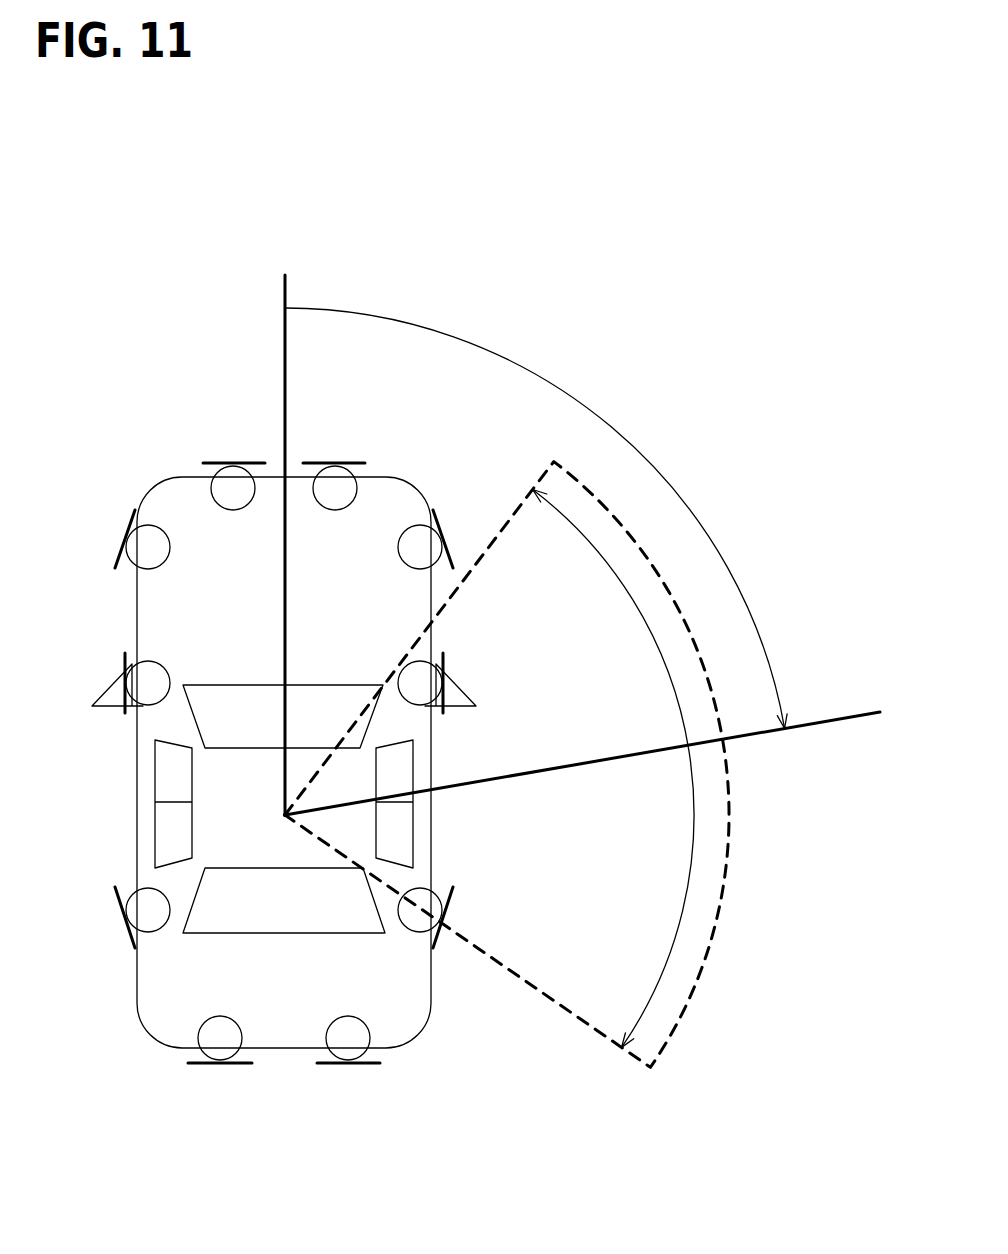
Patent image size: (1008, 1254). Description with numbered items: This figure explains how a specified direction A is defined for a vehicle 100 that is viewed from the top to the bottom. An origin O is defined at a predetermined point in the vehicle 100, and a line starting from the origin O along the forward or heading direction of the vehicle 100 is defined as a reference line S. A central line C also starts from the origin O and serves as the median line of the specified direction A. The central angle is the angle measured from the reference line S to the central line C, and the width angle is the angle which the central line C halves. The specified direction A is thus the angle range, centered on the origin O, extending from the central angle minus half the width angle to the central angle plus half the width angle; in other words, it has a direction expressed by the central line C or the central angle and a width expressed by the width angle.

The vehicle 100 is at (155, 485).
The reference line S is at (283, 358).
The central line C is at (591, 758).
The origin O is at (274, 816).
The specified direction A is at (730, 823).